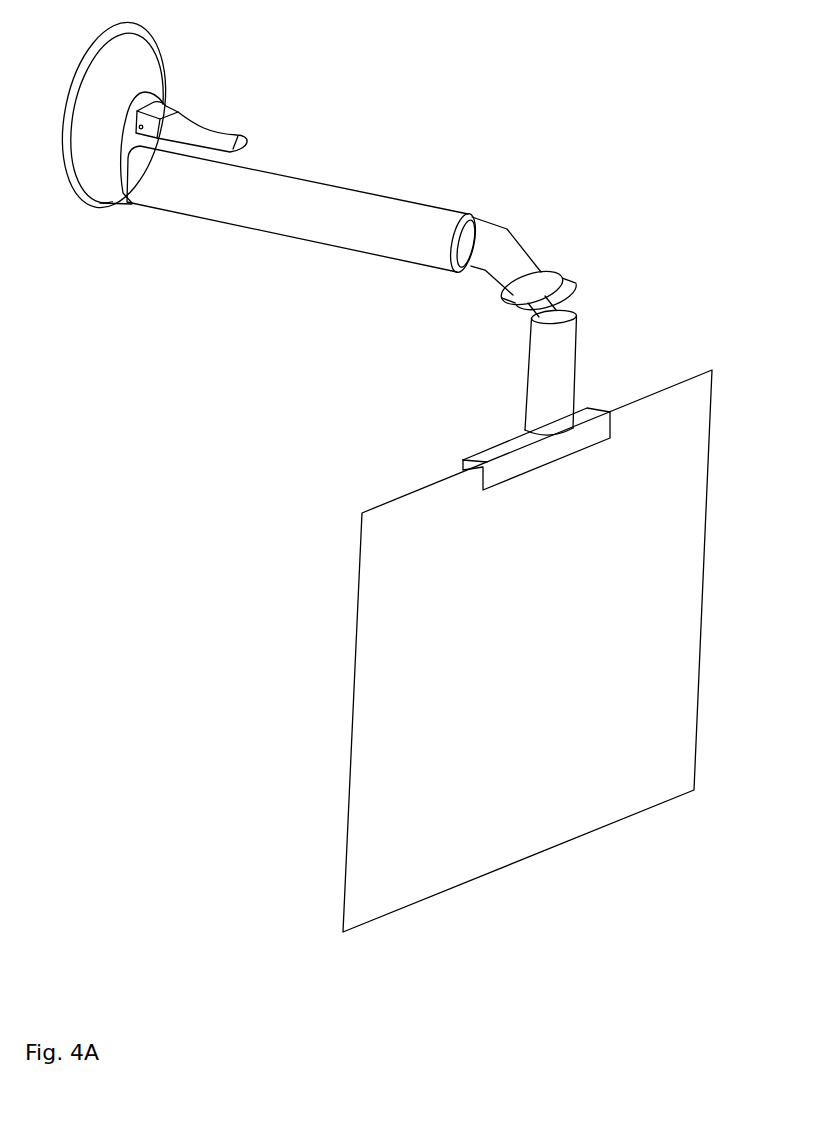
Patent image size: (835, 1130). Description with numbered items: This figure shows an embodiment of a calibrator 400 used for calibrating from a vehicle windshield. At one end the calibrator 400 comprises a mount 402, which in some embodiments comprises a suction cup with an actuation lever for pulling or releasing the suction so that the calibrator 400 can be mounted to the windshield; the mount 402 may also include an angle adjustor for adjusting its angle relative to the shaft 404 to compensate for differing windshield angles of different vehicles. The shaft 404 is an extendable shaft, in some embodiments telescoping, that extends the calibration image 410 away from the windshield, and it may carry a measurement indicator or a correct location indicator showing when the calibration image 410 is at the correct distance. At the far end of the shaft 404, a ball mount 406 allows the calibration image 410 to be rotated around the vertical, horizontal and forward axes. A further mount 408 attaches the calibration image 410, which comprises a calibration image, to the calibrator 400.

The calibrator 400 is at (235, 437).
The mount 402 is at (152, 52).
The shaft 404 is at (382, 195).
The ball mount 406 is at (571, 307).
The mount 408 is at (583, 410).
The calibration image 410 is at (712, 370).